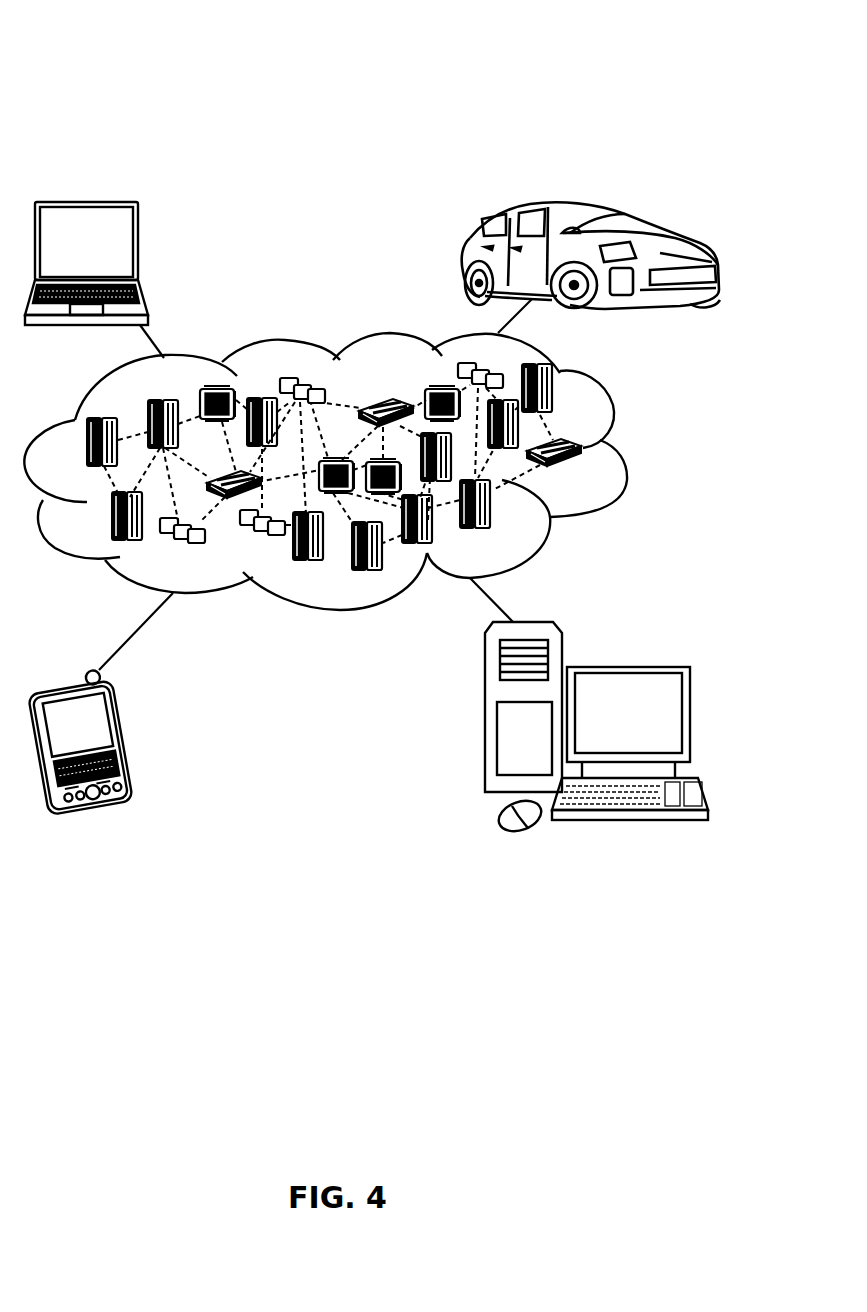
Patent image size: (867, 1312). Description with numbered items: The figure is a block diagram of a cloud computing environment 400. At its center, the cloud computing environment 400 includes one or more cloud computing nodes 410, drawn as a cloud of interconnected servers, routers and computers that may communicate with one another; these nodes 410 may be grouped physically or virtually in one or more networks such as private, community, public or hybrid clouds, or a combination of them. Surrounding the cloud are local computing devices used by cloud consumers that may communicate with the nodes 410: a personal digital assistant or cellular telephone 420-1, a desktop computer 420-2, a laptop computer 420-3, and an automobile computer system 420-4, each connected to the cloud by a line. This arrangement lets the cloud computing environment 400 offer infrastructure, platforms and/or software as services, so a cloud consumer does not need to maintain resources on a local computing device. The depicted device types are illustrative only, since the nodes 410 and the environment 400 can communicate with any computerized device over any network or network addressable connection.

The cloud computing environment 400 is at (264, 63).
The cloud computing nodes 410 is at (592, 477).
The personal digital assistant (PDA) or cellular telephone 420-1 is at (132, 734).
The desktop computer 420-2 is at (627, 667).
The laptop computer 420-3 is at (138, 248).
The automobile computer system 420-4 is at (463, 258).